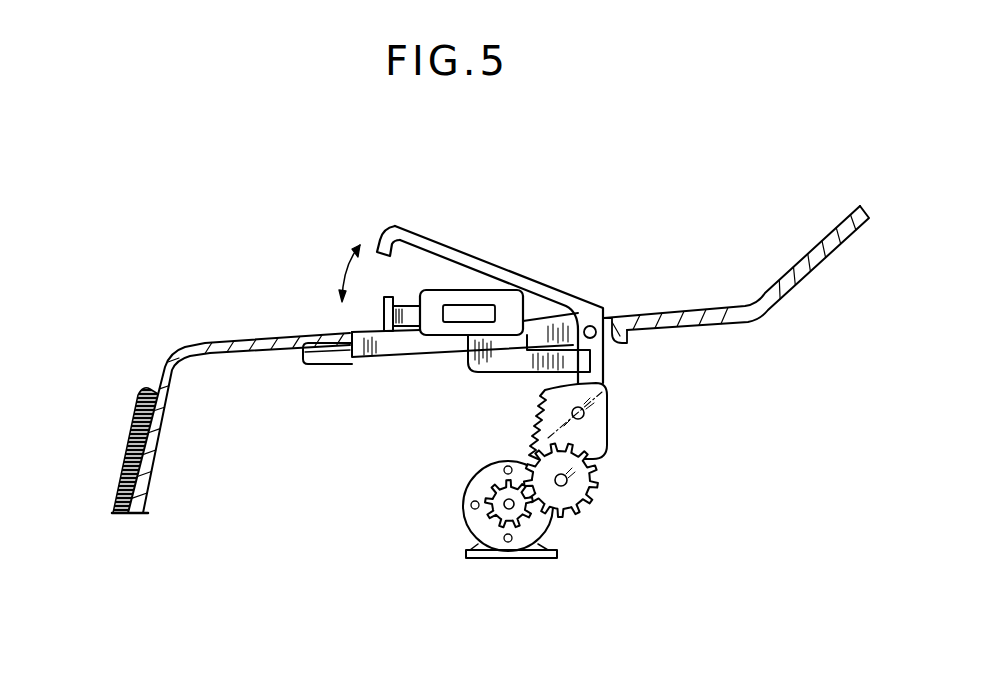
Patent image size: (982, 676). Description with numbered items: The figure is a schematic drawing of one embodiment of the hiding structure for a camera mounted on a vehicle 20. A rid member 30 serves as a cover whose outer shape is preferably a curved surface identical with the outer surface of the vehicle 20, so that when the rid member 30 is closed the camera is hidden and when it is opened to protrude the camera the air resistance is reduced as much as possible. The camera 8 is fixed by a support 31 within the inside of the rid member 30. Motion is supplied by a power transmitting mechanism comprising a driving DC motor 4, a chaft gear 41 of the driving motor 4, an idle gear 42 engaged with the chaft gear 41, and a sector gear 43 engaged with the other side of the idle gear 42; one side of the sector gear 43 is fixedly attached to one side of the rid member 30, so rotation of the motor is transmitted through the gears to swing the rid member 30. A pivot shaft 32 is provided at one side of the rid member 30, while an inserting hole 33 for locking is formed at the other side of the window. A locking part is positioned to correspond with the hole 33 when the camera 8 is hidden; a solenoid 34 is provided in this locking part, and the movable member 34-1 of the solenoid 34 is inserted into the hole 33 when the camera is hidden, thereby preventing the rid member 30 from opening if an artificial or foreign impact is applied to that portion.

The vehicle 20 is at (204, 338).
The rid member 30 is at (540, 290).
The inserting hole 33 is at (379, 243).
The pivot shaft 32 is at (591, 320).
The solenoid 34 is at (298, 355).
The movable member 34-1 is at (365, 360).
The camera 8 is at (434, 320).
The support 31 is at (502, 357).
The driving DC motor 4 is at (486, 510).
The chaft gear 41 is at (472, 486).
The idle gear 42 is at (582, 504).
The sector gear 43 is at (588, 440).